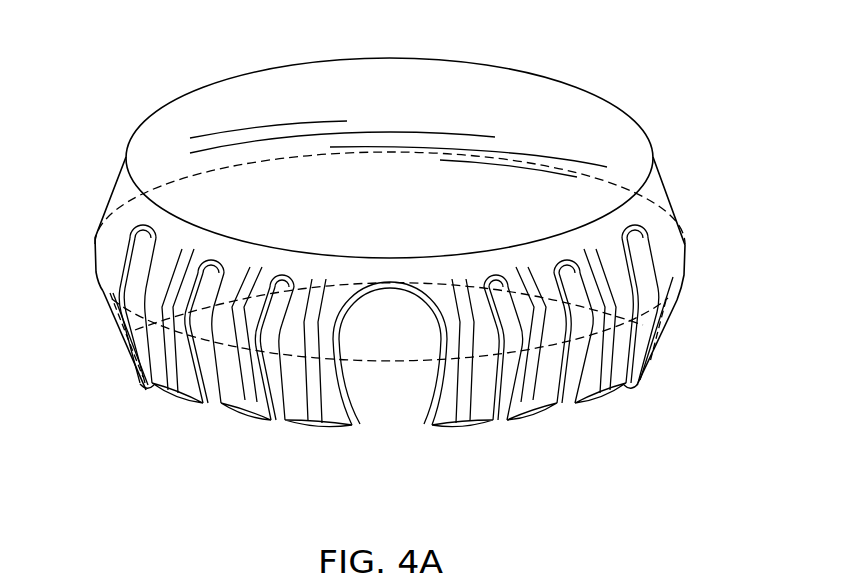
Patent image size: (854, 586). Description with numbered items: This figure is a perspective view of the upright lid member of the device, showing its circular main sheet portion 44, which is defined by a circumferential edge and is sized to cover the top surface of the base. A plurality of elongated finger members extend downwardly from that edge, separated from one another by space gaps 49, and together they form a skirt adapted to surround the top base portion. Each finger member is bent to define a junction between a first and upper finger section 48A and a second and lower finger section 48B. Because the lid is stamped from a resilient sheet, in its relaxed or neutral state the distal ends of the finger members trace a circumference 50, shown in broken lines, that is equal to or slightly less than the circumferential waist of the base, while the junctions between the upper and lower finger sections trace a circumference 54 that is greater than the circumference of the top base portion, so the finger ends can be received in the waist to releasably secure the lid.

The main sheet portion 44 is at (408, 80).
The upper finger section 48A is at (662, 201).
The lower finger section 48B is at (671, 313).
The space gaps 49 is at (508, 352).
The circumference 50 is at (381, 423).
The circumference 54 is at (100, 286).